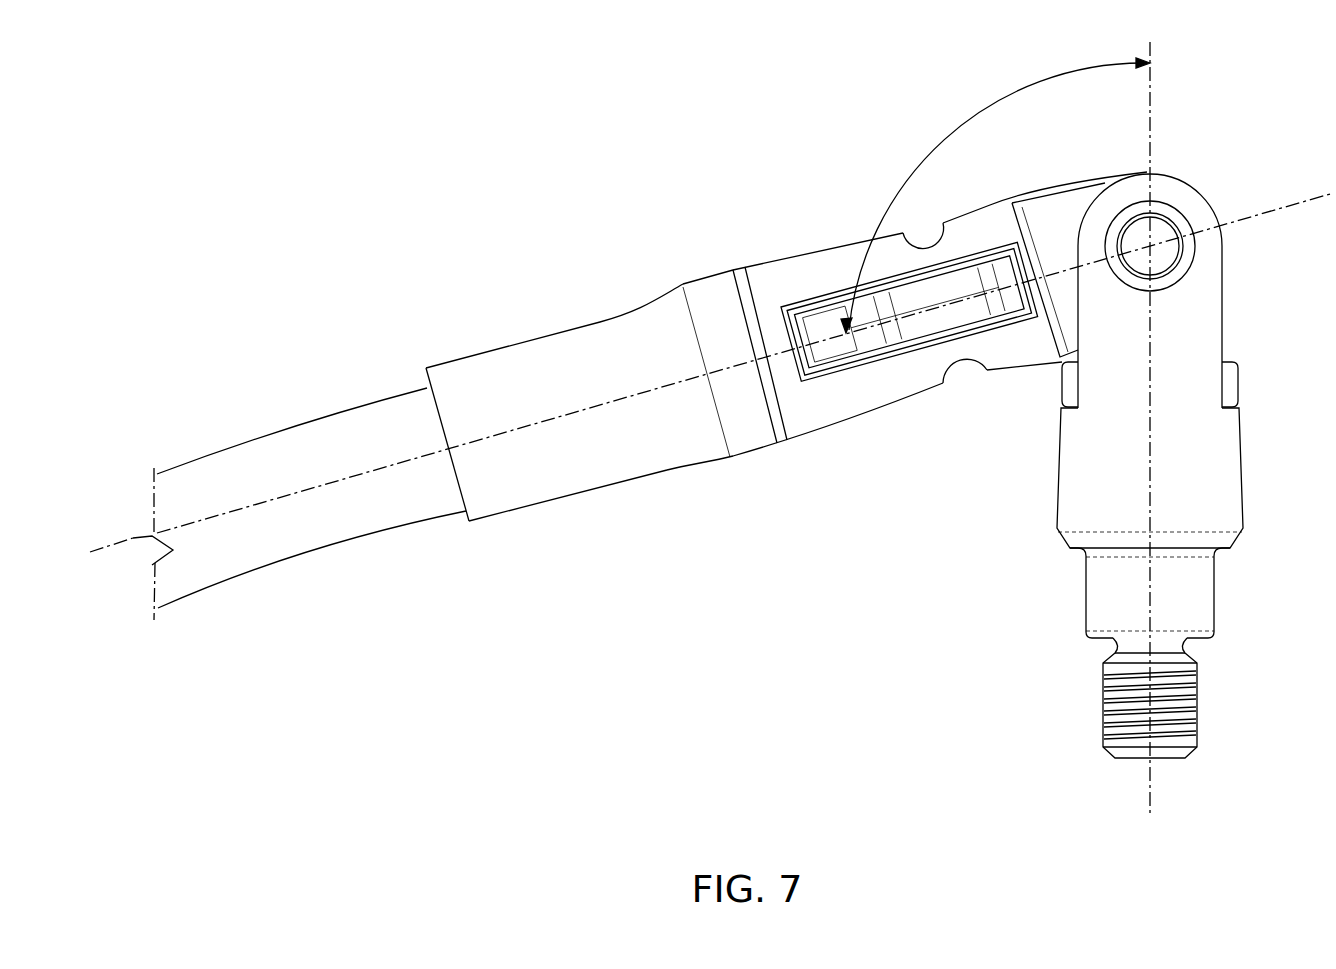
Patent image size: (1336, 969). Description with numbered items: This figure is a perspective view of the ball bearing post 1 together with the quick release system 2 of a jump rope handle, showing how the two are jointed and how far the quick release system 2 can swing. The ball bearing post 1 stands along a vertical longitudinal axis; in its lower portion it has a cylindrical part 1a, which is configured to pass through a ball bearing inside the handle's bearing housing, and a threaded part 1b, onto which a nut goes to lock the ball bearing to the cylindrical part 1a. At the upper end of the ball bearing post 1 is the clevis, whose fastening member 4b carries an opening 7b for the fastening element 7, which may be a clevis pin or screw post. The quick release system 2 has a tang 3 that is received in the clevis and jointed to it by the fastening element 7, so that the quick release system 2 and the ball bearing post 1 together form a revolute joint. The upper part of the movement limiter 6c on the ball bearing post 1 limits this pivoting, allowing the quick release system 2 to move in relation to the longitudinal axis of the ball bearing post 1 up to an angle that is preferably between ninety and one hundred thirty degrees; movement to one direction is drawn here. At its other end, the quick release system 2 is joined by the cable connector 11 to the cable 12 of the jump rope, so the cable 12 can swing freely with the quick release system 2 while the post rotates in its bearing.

The ball bearing post 1 is at (1187, 475).
The cylindrical part 1a is at (1168, 713).
The threaded part 1b is at (1170, 593).
The quick release system 2 is at (863, 396).
The tang 3 is at (1061, 216).
The fastening member 4b is at (1163, 307).
The upper part of movement limiter 6c is at (1060, 385).
The fastening element 7 is at (1157, 237).
The opening for fastening element 7b is at (1180, 253).
The cable connector 11 is at (570, 463).
The cable 12 is at (324, 522).